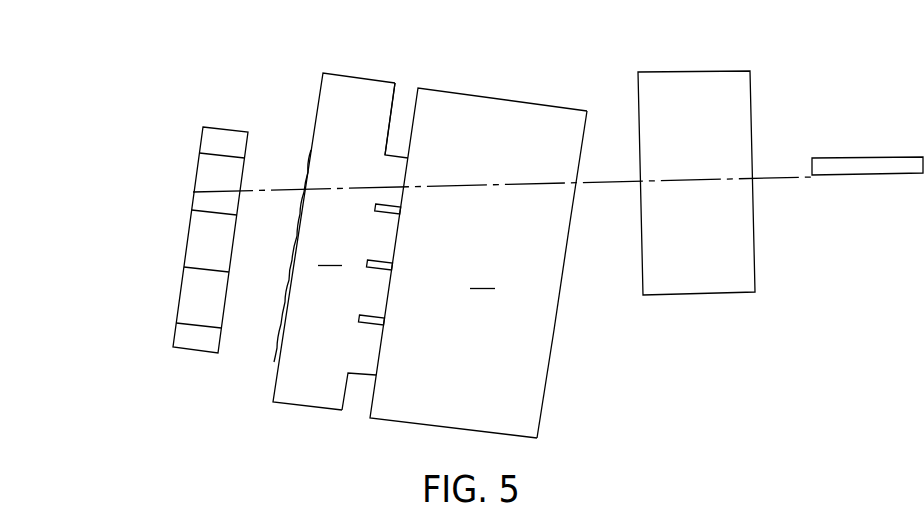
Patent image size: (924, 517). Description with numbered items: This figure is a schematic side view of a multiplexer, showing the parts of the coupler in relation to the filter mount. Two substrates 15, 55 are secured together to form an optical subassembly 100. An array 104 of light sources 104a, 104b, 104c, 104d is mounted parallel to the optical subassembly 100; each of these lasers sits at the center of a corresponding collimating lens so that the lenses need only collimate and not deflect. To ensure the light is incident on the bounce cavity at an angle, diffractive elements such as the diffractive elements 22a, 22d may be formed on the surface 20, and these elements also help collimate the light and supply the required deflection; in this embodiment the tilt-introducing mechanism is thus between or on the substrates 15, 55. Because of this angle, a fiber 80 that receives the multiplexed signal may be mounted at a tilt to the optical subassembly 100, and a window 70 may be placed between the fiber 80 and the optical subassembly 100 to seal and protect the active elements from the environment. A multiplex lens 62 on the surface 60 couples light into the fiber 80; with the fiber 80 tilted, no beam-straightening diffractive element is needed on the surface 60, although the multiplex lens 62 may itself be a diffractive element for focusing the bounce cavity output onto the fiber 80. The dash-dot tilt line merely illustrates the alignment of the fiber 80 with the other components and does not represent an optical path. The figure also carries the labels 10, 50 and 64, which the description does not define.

The first optical plate 10 is at (323, 249).
The substrate 15 is at (334, 241).
The surface 20 is at (394, 83).
The diffractive element 22a is at (377, 178).
The diffractive element 22d is at (352, 360).
The second optical block 50 is at (486, 244).
The substrate 55 is at (473, 263).
The surface 60 is at (548, 362).
The multiplex lens 62 is at (577, 193).
The middle edge portion 64 is at (558, 305).
The window 70 is at (707, 71).
The fiber 80 is at (856, 153).
The optical subassembly 100 is at (566, 428).
The array of light sources 104 is at (173, 216).
The light source 104a is at (204, 152).
The light source 104b is at (198, 208).
The light source 104c is at (190, 266).
The light source 104d is at (178, 322).